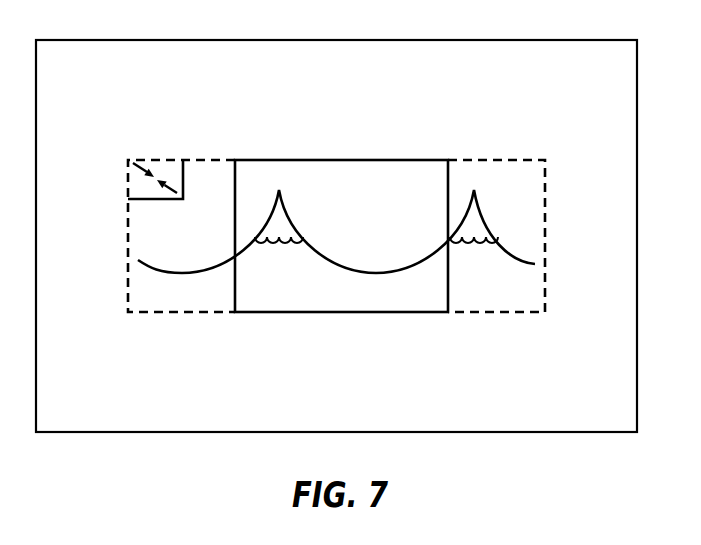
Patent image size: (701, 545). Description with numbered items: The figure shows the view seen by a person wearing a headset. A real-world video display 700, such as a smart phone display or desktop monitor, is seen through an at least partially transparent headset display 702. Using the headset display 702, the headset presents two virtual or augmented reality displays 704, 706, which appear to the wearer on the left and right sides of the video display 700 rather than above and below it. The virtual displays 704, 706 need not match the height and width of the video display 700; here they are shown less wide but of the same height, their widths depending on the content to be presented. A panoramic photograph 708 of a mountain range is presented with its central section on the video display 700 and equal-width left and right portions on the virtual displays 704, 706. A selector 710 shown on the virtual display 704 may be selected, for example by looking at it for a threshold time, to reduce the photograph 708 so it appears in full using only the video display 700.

The headset display 702 is at (104, 82).
The video display 700 is at (372, 160).
The virtual display 704 is at (170, 313).
The virtual display 706 is at (492, 314).
The panoramic photograph 708 is at (345, 298).
The selector 710 is at (163, 160).